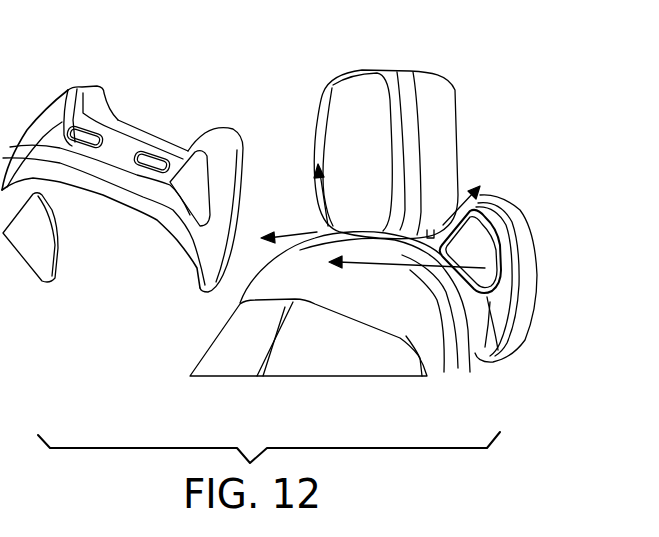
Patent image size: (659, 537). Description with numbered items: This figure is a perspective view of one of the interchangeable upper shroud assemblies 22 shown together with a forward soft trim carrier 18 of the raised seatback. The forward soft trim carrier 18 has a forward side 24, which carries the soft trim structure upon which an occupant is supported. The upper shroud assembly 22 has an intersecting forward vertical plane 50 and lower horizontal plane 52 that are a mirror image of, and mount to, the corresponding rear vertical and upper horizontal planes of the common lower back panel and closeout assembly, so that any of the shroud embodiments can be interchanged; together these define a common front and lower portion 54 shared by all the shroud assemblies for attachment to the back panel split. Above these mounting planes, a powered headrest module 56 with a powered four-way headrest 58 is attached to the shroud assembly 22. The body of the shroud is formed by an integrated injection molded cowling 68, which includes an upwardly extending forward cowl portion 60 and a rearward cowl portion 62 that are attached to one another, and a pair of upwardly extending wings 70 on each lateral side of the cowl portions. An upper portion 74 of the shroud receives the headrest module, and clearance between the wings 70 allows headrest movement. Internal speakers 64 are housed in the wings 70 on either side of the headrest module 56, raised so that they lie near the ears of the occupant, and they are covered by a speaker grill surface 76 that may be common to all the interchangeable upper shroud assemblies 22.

The forward soft trim carrier 18 is at (413, 373).
The interchangeable upper shroud assembly 22 is at (175, 96).
The forward side 24 is at (297, 367).
The forward vertical plane 50 is at (170, 208).
The lower horizontal plane 52 is at (207, 290).
The common front and lower portion 54 is at (193, 265).
The powered headrest module 56 is at (447, 140).
The powered four-way headrest 58 is at (337, 123).
The forward cowl portion 60 is at (497, 350).
The rearward cowl portion 62 is at (527, 293).
The internal speaker 64 is at (488, 248).
The integrated injection molded cowling 68 is at (117, 128).
The upwardly extending wing 70 is at (497, 202).
The upper portion 74 is at (117, 147).
The speaker grill surface 76 is at (47, 270).